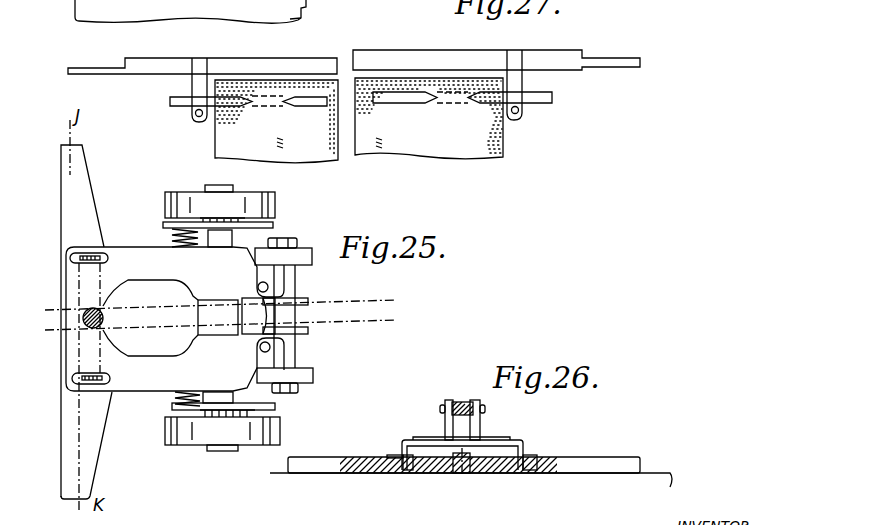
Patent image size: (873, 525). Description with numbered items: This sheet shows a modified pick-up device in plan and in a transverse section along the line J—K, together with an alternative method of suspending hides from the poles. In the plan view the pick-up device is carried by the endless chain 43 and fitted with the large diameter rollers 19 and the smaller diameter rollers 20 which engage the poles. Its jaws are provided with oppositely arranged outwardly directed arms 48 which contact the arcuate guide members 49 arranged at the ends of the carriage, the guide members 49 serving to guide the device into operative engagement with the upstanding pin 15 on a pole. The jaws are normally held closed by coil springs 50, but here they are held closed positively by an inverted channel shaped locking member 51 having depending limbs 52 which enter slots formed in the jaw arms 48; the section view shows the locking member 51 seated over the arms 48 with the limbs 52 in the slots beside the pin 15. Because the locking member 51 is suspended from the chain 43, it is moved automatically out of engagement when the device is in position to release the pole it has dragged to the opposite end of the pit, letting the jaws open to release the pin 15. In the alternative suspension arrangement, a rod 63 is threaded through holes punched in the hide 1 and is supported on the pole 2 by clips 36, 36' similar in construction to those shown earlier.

In FIG. 27, the hide 1 is at (490, 145).
In FIG. 27, the pole 2 is at (388, 58).
In FIG. 25, the upstanding pin 15 is at (92, 306).
In FIG. 26, the upstanding pin 15 is at (462, 453).
In FIG. 25, the roller 19 is at (281, 432).
In FIG. 25, the roller 20 is at (302, 248).
In FIG. 27, the clip 36 is at (163, 90).
In FIG. 27, the clip 36' is at (553, 92).
In FIG. 25, the endless chain 43 is at (386, 321).
In FIG. 26, the endless chain 43 is at (462, 400).
In FIG. 25, the jaw arm 48 is at (90, 194).
In FIG. 26, the jaw arm 48 is at (338, 458).
In FIG. 27, the guide member 49 is at (301, 3).
In FIG. 25, the coil spring 50 is at (177, 396).
In FIG. 25, the locking member 51 is at (100, 285).
In FIG. 26, the locking member 51 is at (500, 438).
In FIG. 25, the depending limb 52 is at (79, 255).
In FIG. 26, the depending limb 52 is at (527, 448).
In FIG. 27, the rod 63 is at (398, 97).